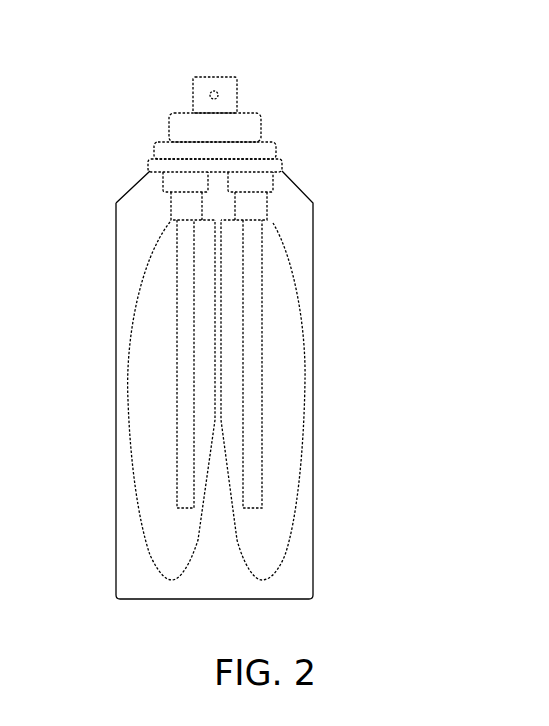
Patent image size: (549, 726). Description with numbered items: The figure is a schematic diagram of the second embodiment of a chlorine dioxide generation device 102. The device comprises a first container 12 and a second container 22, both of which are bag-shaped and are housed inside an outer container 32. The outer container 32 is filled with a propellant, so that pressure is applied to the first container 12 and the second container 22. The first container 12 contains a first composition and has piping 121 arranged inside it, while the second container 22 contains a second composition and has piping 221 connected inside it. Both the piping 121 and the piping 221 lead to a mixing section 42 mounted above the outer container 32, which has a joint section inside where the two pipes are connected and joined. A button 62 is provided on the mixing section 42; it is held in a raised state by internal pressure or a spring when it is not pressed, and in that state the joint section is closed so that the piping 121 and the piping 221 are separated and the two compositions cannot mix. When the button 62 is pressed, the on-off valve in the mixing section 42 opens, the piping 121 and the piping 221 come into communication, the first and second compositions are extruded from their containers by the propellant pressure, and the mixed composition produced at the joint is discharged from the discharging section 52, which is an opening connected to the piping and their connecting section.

The chlorine dioxide generation device 102 is at (353, 66).
The outer container 32 is at (308, 540).
The mixing section 42 is at (242, 127).
The button 62 is at (192, 78).
The discharging section 52 is at (222, 93).
The piping 221 is at (178, 233).
The piping 121 is at (255, 235).
The second container 22 is at (133, 322).
The first container 12 is at (295, 322).